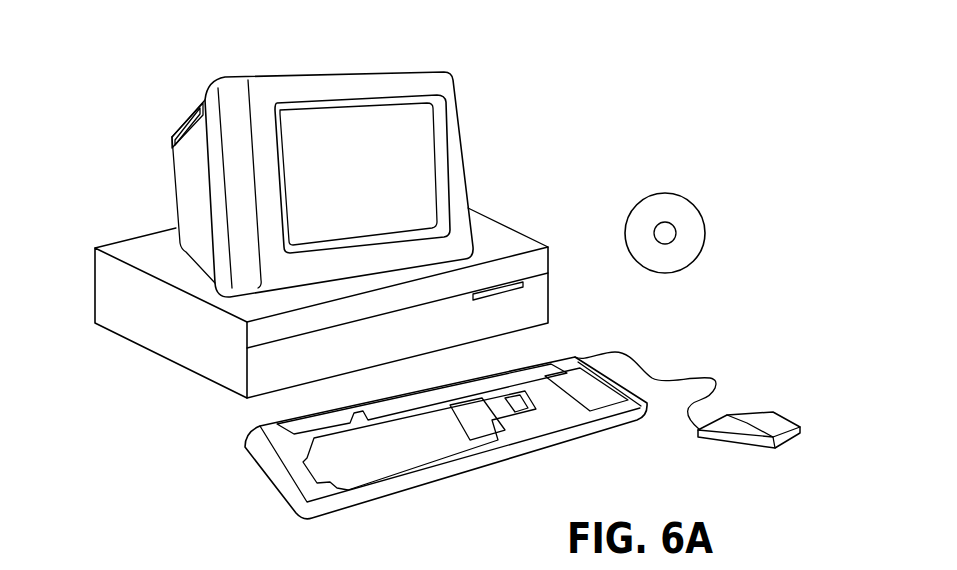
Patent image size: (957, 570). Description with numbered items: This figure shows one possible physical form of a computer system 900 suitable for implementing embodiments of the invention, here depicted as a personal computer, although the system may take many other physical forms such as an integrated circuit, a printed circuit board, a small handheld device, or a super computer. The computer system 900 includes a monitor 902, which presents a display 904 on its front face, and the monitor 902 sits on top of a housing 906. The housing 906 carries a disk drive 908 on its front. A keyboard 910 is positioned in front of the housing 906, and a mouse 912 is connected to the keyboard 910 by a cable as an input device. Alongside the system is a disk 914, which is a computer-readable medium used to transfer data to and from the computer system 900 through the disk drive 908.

The computer system 900 is at (581, 114).
The monitor 902 is at (463, 160).
The display 904 is at (425, 132).
The housing 906 is at (205, 378).
The disk drive 908 is at (523, 281).
The keyboard 910 is at (537, 452).
The mouse 912 is at (778, 420).
The disk 914 is at (682, 193).